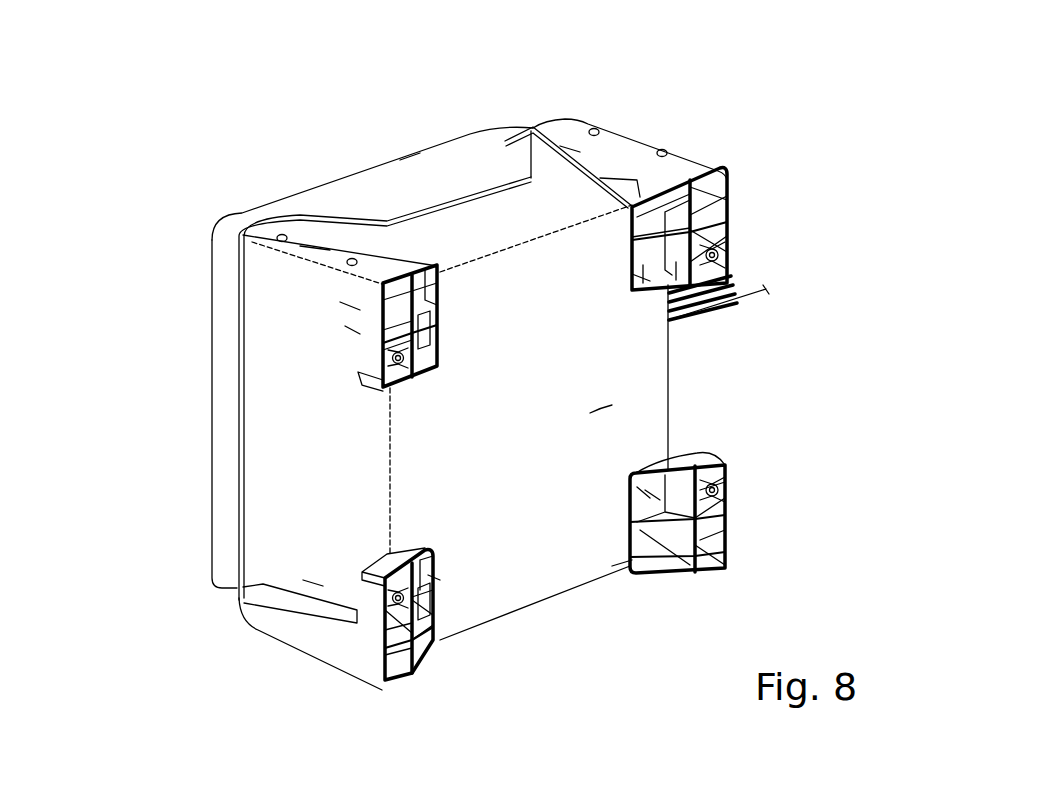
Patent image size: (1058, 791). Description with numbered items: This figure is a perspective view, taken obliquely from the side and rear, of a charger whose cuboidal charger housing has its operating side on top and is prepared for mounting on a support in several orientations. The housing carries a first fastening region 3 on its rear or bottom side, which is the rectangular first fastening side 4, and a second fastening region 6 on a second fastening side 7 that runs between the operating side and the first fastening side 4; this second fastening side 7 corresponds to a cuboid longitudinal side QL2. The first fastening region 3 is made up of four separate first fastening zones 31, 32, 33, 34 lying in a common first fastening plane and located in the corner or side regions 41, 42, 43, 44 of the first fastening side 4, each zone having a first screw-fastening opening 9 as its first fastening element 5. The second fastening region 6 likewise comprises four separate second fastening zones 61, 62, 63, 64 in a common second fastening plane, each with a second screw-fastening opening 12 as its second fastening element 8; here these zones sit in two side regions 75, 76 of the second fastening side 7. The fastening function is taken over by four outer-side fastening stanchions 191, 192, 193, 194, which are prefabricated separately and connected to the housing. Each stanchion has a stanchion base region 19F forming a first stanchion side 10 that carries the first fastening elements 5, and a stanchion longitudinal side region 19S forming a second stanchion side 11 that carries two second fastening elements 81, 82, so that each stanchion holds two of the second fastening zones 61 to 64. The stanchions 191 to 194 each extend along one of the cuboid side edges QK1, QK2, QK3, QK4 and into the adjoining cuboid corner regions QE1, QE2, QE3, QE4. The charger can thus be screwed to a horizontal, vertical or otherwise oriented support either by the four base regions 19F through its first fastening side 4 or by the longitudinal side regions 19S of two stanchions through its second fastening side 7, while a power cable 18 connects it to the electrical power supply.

The first fastening region 3 is at (563, 448).
The first fastening zone 31 is at (726, 255).
The first fastening zone 32 is at (735, 537).
The first fastening zone 33 is at (398, 361).
The first fastening zone 34 is at (423, 654).
The first fastening side 4 is at (613, 405).
The corner or side region of first fastening side 41 is at (648, 282).
The corner or side region of first fastening side 42 is at (650, 540).
The corner or side region of first fastening side 43 is at (438, 300).
The corner or side region of first fastening side 44 is at (438, 608).
The first fastening element 5 is at (608, 417).
The first screw-fastening opening 9 is at (720, 254).
The second fastening region 6 is at (362, 196).
The second fastening zone 61 is at (569, 119).
The second fastening zone 62 is at (634, 180).
The second fastening zone 63 is at (263, 236).
The second fastening zone 64 is at (340, 262).
The second fastening side 7 is at (423, 175).
The side region of second fastening side 75 is at (643, 168).
The side region of second fastening side 76 is at (310, 247).
The second fastening element 8 is at (479, 195).
The second fastening element 81 is at (350, 266).
The second fastening element 82 is at (279, 236).
The second screw-fastening opening 12 is at (479, 195).
The first stanchion side 10 is at (697, 313).
The second stanchion side 11 is at (321, 236).
The power cable 18 is at (758, 297).
The stanchion longitudinal side region 19S is at (479, 195).
The stanchion base region 19F is at (735, 262).
The outer-side fastening stanchion 191 is at (679, 229).
The outer-side fastening stanchion 192 is at (677, 513).
The outer-side fastening stanchion 193 is at (410, 326).
The outer-side fastening stanchion 194 is at (409, 615).
The cuboid longitudinal side QL2 is at (410, 176).
The cuboid side edge QK1 is at (570, 148).
The cuboid side edge QK2 is at (622, 568).
The cuboid side edge QK3 is at (345, 306).
The cuboid side edge QK4 is at (313, 583).
The cuboid corner region QE1 is at (632, 274).
The cuboid corner region QE2 is at (648, 494).
The cuboid corner region QE3 is at (352, 330).
The cuboid corner region QE4 is at (434, 578).